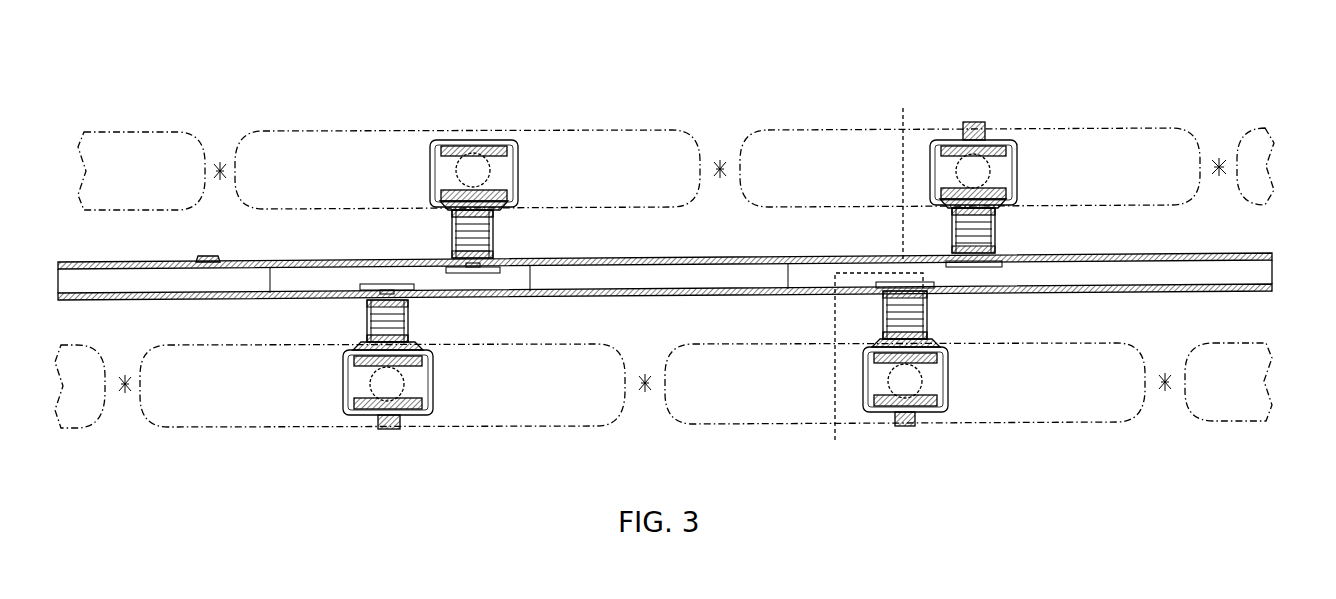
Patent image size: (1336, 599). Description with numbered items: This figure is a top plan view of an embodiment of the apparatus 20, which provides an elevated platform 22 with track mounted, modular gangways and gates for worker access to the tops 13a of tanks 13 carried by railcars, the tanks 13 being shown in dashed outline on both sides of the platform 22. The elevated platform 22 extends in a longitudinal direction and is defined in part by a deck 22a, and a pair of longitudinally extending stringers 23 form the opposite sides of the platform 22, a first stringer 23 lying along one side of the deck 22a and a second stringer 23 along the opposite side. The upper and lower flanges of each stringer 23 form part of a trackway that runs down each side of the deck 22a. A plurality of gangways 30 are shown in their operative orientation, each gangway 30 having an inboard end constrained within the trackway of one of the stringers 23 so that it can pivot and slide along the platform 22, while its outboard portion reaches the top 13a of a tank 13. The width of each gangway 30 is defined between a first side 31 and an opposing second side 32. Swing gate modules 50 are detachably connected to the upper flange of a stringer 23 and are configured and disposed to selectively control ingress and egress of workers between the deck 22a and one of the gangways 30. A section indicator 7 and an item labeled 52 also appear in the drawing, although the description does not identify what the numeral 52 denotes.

The apparatus 20 is at (688, 78).
The tank 13 is at (548, 128).
The top of tank 13a is at (450, 148).
The elevated platform 22 is at (696, 271).
The deck 22a is at (1276, 281).
The stringer 23 is at (622, 258).
The gangway 30 is at (680, 280).
The first side of gangway 31 is at (451, 223).
The second side of gangway 32 is at (495, 231).
The swing gate module 50 is at (376, 280).
The clip tab 52 is at (470, 267).
The section line 7 is at (903, 110).